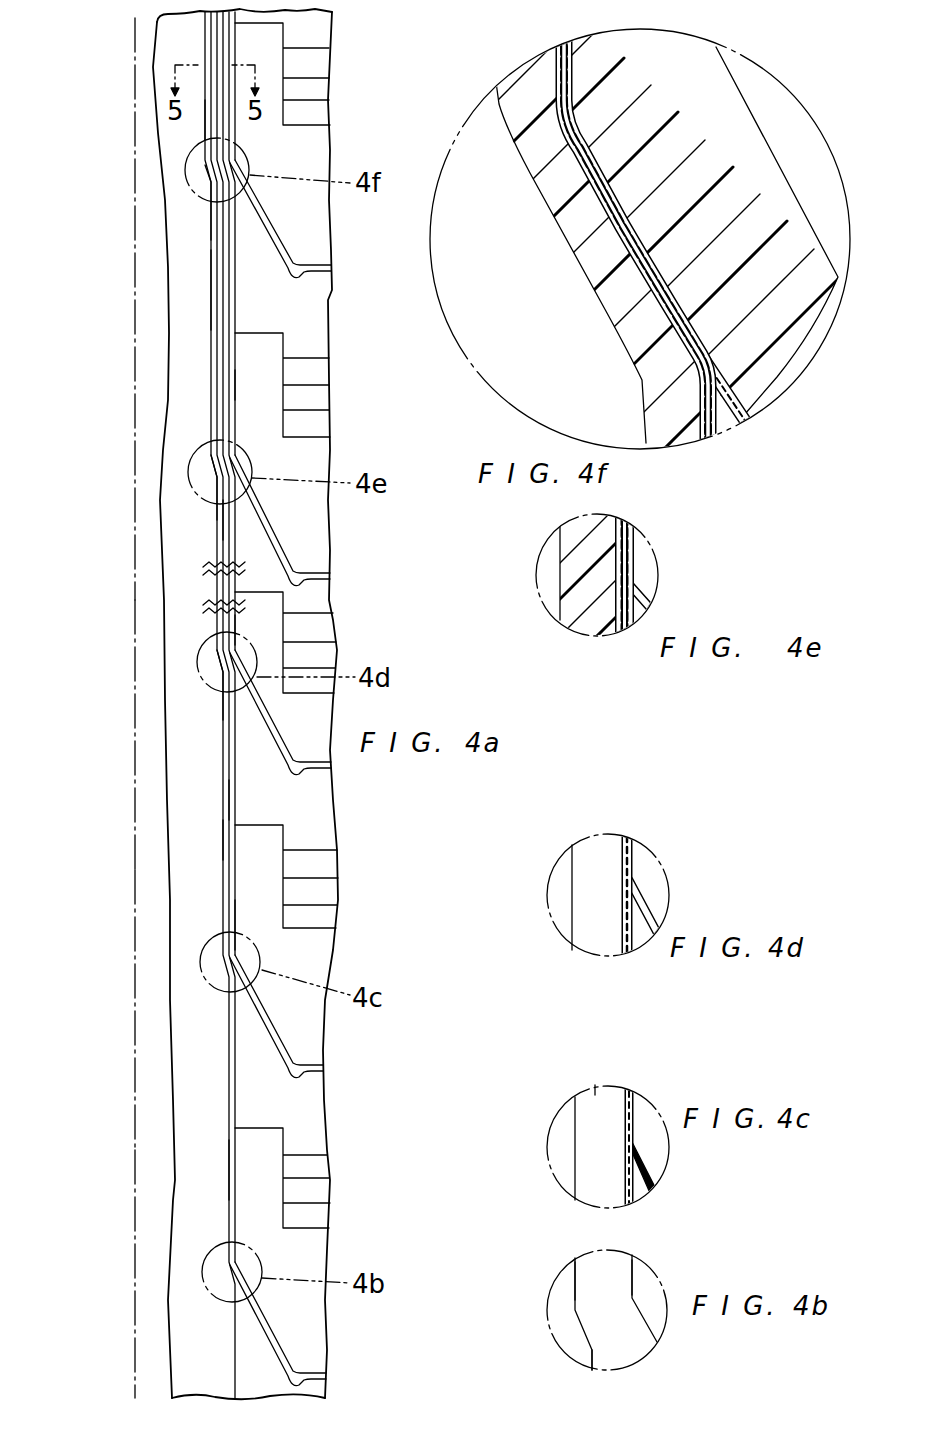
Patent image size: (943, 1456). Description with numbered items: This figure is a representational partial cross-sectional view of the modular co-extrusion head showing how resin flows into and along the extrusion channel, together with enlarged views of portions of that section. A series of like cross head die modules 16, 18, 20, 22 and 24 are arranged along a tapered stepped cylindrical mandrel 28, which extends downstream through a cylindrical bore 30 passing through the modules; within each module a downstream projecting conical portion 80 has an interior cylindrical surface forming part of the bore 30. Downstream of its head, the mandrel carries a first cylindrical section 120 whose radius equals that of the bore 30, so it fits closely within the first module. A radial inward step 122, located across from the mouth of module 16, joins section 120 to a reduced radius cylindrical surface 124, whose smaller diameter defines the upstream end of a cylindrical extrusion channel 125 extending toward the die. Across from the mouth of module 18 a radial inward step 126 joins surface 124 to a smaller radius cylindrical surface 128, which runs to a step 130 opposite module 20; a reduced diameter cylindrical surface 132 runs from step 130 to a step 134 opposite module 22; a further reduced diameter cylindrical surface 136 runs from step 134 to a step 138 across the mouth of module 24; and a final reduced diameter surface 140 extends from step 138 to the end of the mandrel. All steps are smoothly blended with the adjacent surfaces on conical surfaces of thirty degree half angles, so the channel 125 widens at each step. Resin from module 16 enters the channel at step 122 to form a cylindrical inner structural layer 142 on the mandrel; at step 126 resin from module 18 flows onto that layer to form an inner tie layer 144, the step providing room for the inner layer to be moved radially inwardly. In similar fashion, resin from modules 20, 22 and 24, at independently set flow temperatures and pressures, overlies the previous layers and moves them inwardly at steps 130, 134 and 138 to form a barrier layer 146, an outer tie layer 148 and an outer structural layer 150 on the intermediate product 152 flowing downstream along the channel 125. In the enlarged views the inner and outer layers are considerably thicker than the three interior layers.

In FIG. 4A, the cross head die module 16 is at (104, 1290).
In FIG. 4A, the cross head die module 18 is at (104, 1025).
In FIG. 4A, the cross head die module 20 is at (104, 712).
In FIG. 4A, the cross head die module 22 is at (104, 488).
In FIG. 4A, the cross head die module 24 is at (104, 200).
In FIG. 4A, the tapered stepped cylindrical mandrel 28 is at (182, 385).
In FIG. 4A, the cylindrical bore 30 is at (237, 125).
In FIG. 4A, the downstream projecting conical portion 80 is at (272, 272).
In FIG. 4F, the downstream projecting conical portion 80 is at (731, 415).
In FIG. 4B, the downstream projecting conical portion 80 is at (600, 1370).
In FIG. 4A, the first cylindrical section 120 is at (233, 1340).
In FIG. 4A, the radial inward step 122 is at (228, 1275).
In FIG. 4B, the radial inward step 122 is at (580, 1330).
In FIG. 4A, the reduced radius cylindrical surface 124 is at (228, 1092).
In FIG. 4B, the reduced radius cylindrical surface 124 is at (575, 1275).
In FIG. 4A, the cylindrical extrusion channel 125 is at (230, 840).
In FIG. 4A, the radial inward step 126 is at (222, 968).
In FIG. 4C, the radial inward step 126 is at (575, 1145).
In FIG. 4A, the cylindrical surface 128 is at (220, 770).
In FIG. 4A, the step 130 is at (215, 682).
In FIG. 4D, the step 130 is at (572, 895).
In FIG. 4A, the reduced diameter cylindrical surface 132 is at (222, 524).
In FIG. 4A, the step 134 is at (210, 488).
In FIG. 4E, the step 134 is at (560, 580).
In FIG. 4A, the reduced diameter cylindrical surface 136 is at (208, 292).
In FIG. 4A, the step 138 is at (201, 182).
In FIG. 4F, the step 138 is at (582, 268).
In FIG. 4A, the final reduced diameter surface 140 is at (203, 123).
In FIG. 4A, the inner structural layer 142 is at (228, 1165).
In FIG. 4C, the inner structural layer 142 is at (585, 1095).
In FIG. 4B, the inner structural layer 142 is at (620, 1285).
In FIG. 4A, the inner tie layer 144 is at (235, 922).
In FIG. 4C, the inner tie layer 144 is at (636, 1108).
In FIG. 4A, the barrier layer 146 is at (228, 632).
In FIG. 4D, the barrier layer 146 is at (645, 915).
In FIG. 4A, the outer tie layer 148 is at (233, 390).
In FIG. 4E, the outer tie layer 148 is at (640, 590).
In FIG. 4A, the outer structural layer 150 is at (232, 42).
In FIG. 4F, the outer structural layer 150 is at (735, 137).
In FIG. 4A, the intermediate product 152 is at (244, 800).